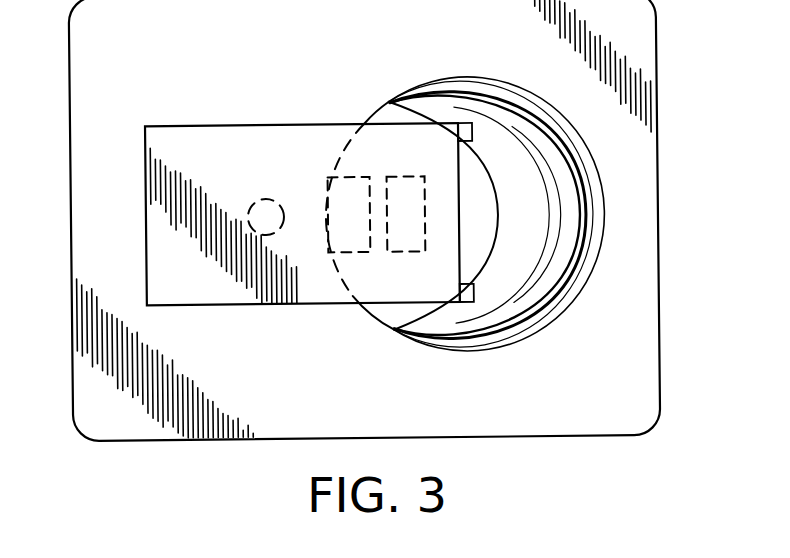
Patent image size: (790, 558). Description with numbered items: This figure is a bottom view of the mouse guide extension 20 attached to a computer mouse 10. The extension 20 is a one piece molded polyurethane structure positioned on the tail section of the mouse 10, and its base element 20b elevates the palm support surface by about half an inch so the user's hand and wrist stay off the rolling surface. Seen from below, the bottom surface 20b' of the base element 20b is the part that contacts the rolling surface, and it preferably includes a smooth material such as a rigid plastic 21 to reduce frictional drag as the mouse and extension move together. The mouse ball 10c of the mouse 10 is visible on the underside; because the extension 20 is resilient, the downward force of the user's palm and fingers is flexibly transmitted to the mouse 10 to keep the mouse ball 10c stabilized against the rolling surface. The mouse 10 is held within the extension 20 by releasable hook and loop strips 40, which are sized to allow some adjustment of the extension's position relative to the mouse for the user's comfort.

The computer mouse 10 is at (194, 137).
The mouse ball 10c is at (254, 202).
The mouse guide extension 20 is at (530, 86).
The base element 20b is at (517, 219).
The bottom surface 20b' is at (371, 201).
The rigid plastic 21 is at (318, 297).
The hook and loop strip 40 is at (346, 176).